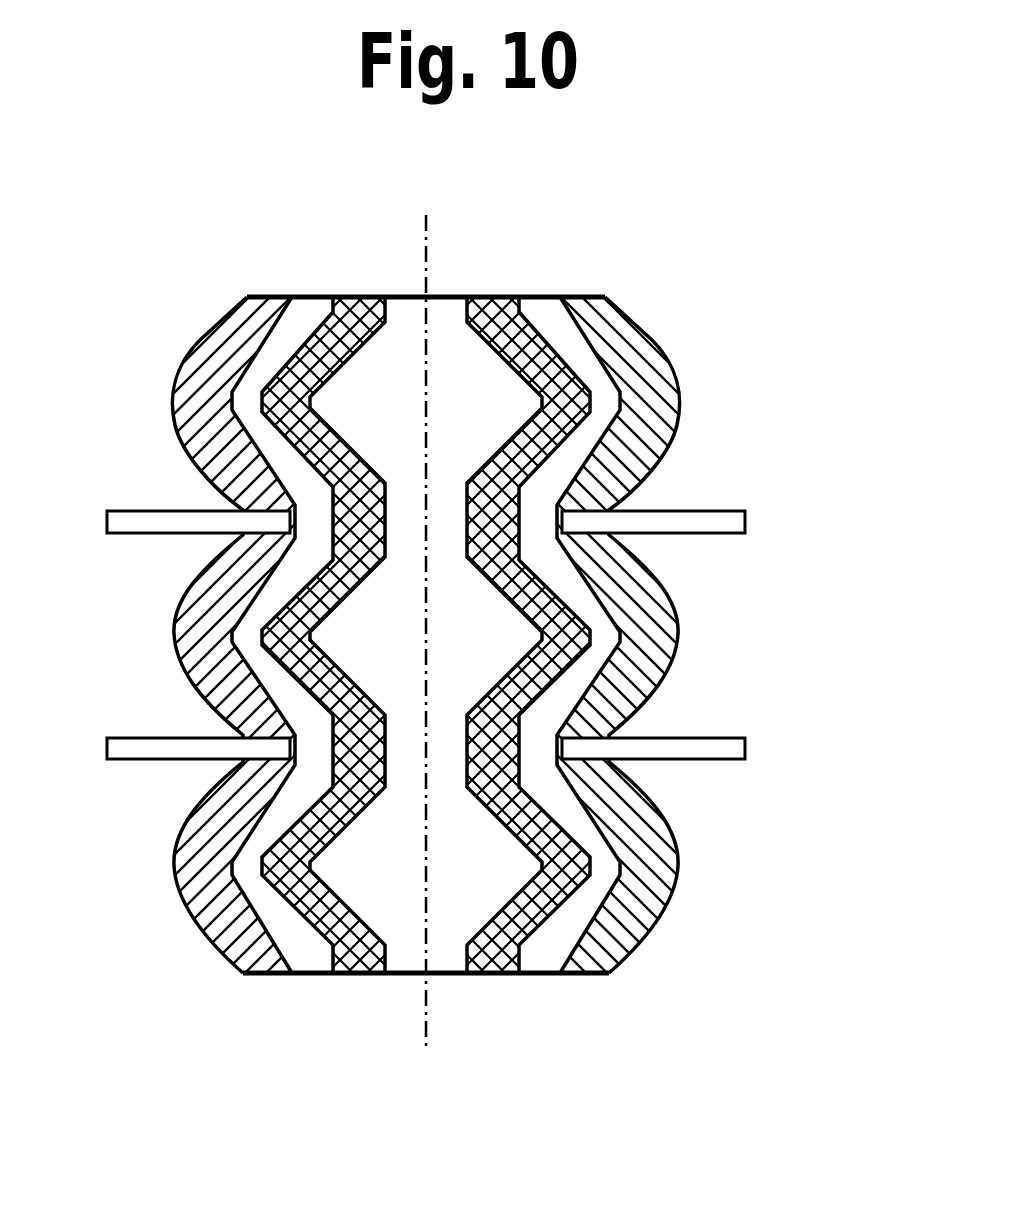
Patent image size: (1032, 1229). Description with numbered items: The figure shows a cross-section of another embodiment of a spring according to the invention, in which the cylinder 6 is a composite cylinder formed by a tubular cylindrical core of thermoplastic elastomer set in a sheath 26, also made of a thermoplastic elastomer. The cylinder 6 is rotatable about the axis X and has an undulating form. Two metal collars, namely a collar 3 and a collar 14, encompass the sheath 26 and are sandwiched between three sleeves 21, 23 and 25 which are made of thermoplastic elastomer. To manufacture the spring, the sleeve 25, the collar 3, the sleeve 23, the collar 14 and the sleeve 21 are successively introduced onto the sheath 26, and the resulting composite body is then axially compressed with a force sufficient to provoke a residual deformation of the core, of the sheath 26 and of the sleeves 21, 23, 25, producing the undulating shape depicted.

The metal collar 3 is at (707, 759).
The cylinder 6 is at (486, 312).
The collar 14 is at (705, 521).
The right cylindrical sleeve 21 is at (498, 628).
The right cylindrical sleeve 23 is at (430, 575).
The right cylindrical sleeve 25 is at (633, 907).
The sheath 26 is at (535, 314).
The axis X is at (426, 1012).